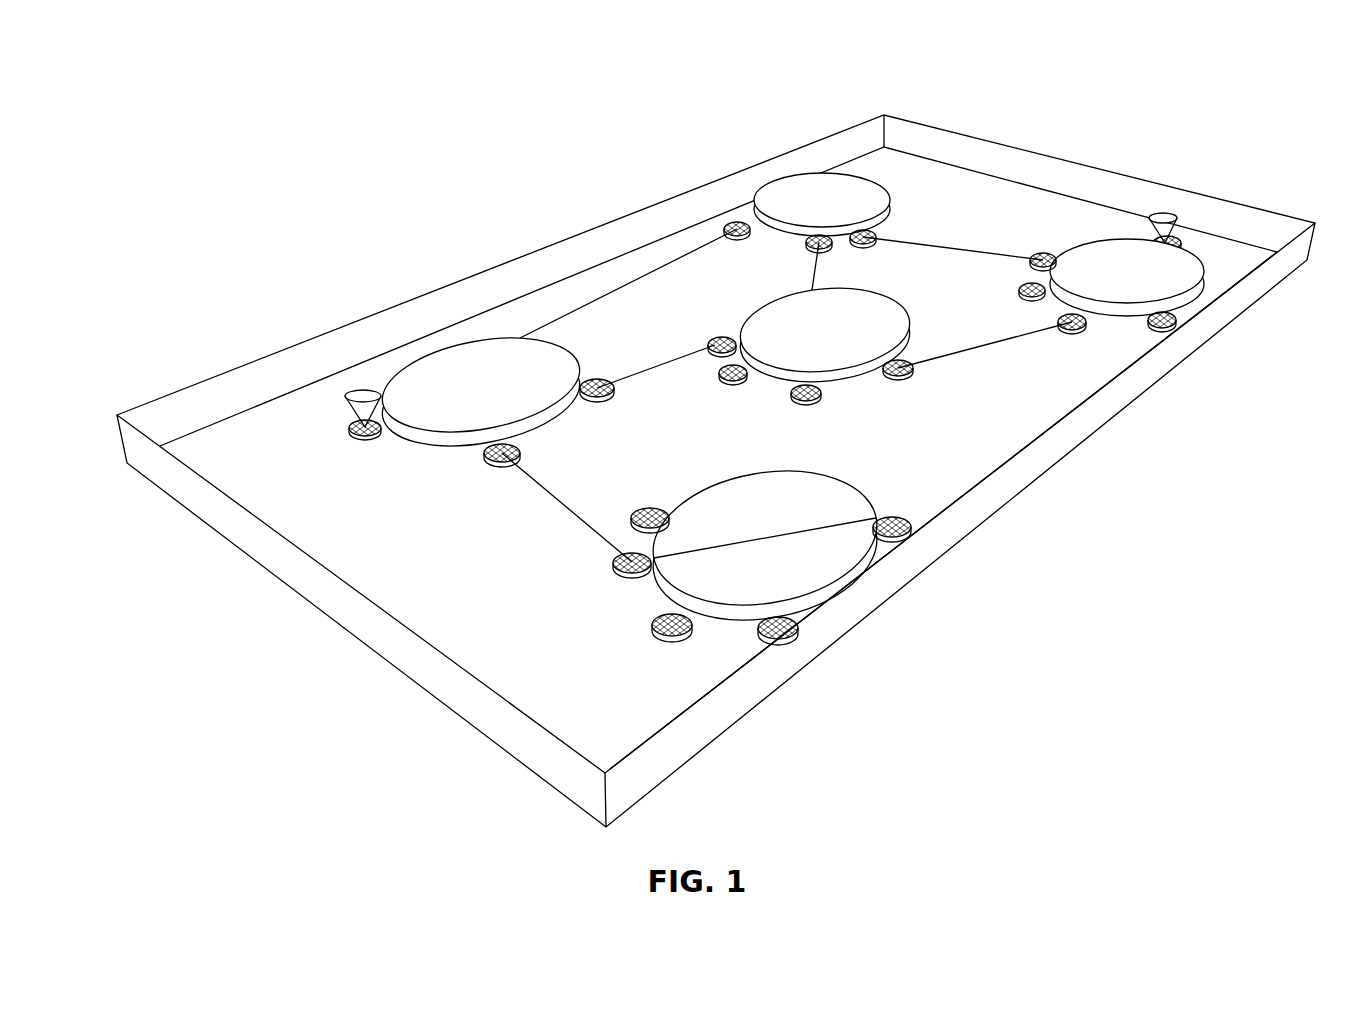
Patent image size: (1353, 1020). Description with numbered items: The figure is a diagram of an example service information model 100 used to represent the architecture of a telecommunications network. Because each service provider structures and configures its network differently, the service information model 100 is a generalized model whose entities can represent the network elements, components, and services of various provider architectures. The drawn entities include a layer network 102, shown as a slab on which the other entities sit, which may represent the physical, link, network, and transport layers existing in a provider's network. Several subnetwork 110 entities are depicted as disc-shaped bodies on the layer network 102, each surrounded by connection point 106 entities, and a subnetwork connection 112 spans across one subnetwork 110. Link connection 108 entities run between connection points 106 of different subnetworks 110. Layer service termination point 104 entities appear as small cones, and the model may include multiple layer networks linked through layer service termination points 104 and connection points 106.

The service information model 100 is at (1242, 69).
The layer network 102 is at (268, 356).
The layer service termination point 104 is at (348, 425).
The connection point 106 is at (603, 381).
The link connection 108 is at (571, 513).
The subnetwork 110 is at (717, 498).
The subnetwork connection 112 is at (757, 545).